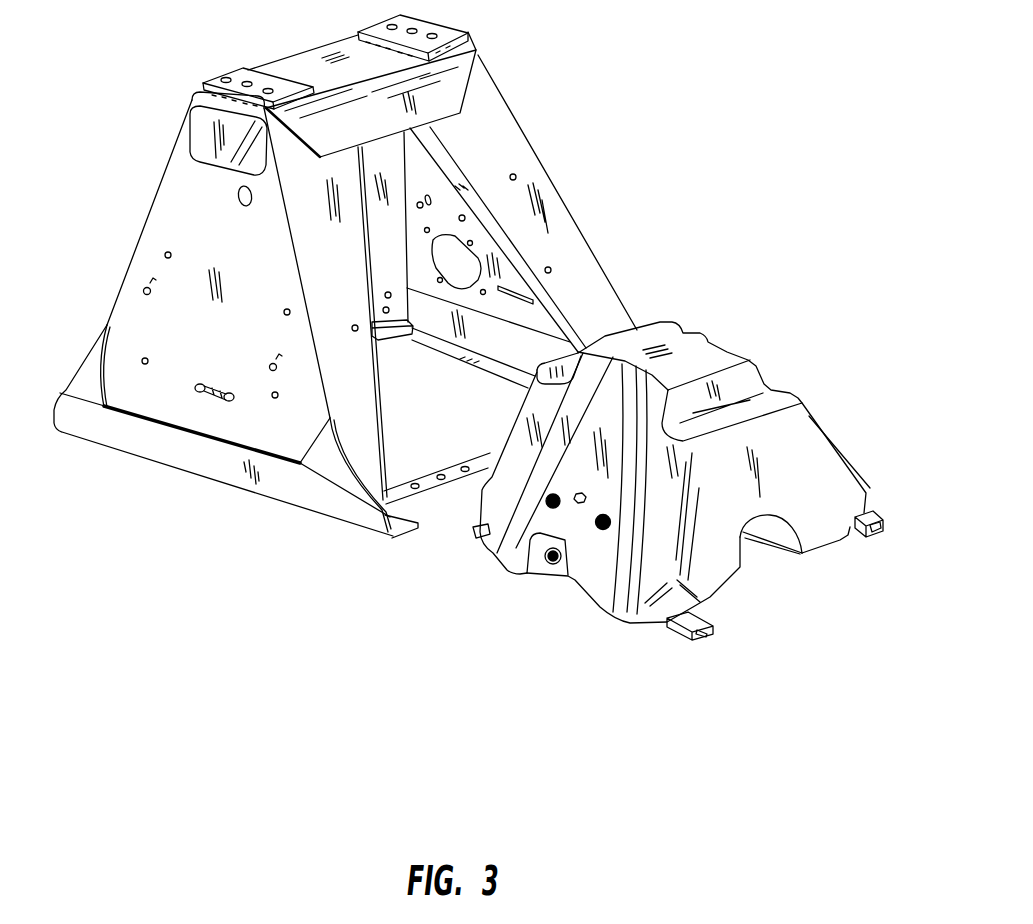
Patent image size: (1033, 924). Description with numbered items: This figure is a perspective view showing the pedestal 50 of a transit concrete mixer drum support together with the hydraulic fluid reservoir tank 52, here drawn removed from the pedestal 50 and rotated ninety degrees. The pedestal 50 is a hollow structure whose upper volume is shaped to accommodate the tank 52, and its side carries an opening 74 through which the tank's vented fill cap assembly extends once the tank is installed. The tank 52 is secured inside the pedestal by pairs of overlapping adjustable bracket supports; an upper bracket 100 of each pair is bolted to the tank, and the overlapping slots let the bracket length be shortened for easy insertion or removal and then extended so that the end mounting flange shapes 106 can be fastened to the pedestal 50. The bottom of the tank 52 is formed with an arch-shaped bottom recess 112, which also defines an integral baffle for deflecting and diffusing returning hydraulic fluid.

The pedestal 50 is at (472, 65).
The hydraulic fluid reservoir tank 52 is at (703, 352).
The opening 74 is at (207, 142).
The upper bracket 100 is at (866, 518).
The end mounting flange shape 106 is at (877, 537).
The arch-shaped bottom recess 112 is at (747, 539).